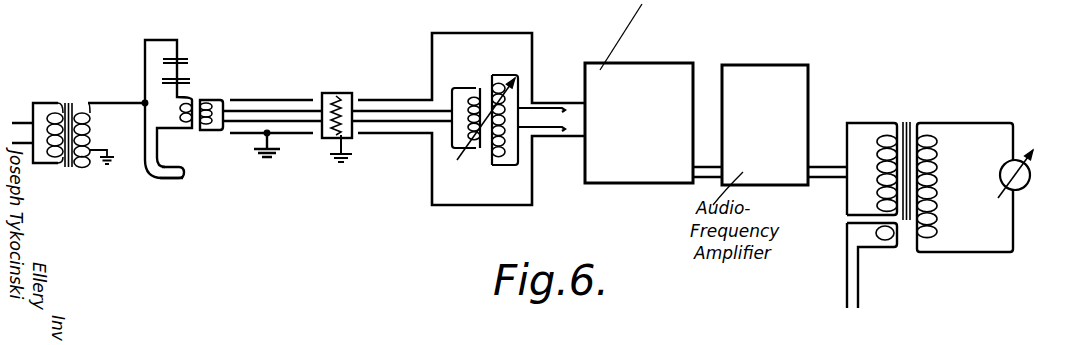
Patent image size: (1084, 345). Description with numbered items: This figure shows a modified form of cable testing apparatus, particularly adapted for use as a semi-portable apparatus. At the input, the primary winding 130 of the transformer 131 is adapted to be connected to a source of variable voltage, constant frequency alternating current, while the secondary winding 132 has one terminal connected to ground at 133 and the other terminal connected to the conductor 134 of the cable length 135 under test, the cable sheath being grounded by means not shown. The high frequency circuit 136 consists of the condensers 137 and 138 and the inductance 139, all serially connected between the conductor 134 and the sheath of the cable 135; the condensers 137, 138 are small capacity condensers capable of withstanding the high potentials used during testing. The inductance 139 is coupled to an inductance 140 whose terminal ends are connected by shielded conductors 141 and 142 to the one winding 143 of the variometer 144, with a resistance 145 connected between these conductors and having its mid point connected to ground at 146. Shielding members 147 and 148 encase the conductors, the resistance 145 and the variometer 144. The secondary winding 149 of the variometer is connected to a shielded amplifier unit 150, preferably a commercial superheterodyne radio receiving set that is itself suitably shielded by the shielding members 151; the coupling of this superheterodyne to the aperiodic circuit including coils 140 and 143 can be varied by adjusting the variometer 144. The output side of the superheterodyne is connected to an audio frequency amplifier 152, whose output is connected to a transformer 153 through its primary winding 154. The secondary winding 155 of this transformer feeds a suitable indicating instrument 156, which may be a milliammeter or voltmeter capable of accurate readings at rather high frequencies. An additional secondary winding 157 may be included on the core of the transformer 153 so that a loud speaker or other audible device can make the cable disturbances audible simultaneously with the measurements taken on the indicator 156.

The primary winding 130 is at (57, 115).
The transformer 131 is at (69, 167).
The secondary winding 132 is at (85, 114).
The ground 133 is at (108, 150).
The conductor 134 is at (144, 103).
The cable length 135 is at (173, 180).
The high frequency circuit 136 is at (168, 95).
The condenser 137 is at (186, 58).
The condenser 138 is at (190, 80).
The inductance 139 is at (193, 127).
The inductance 140 is at (209, 112).
The shielded conductor 141 is at (255, 108).
The shielded conductor 142 is at (277, 118).
The winding of variometer 143 is at (472, 98).
The variometer 144 is at (515, 131).
The resistance 145 is at (340, 93).
The ground connection of resistor 146 is at (337, 150).
The shielding member 147 is at (292, 136).
The shielding member 148 is at (402, 136).
The secondary winding of variometer 149 is at (517, 78).
The amplifier unit 150 is at (632, 73).
The shielding member 151 is at (620, 176).
The audio frequency amplifier 152 is at (763, 77).
The transformer 153 is at (908, 121).
The primary winding 154 is at (882, 140).
The secondary winding 155 is at (935, 140).
The indicating instrument 156 is at (1031, 168).
The additional secondary winding 157 is at (884, 243).